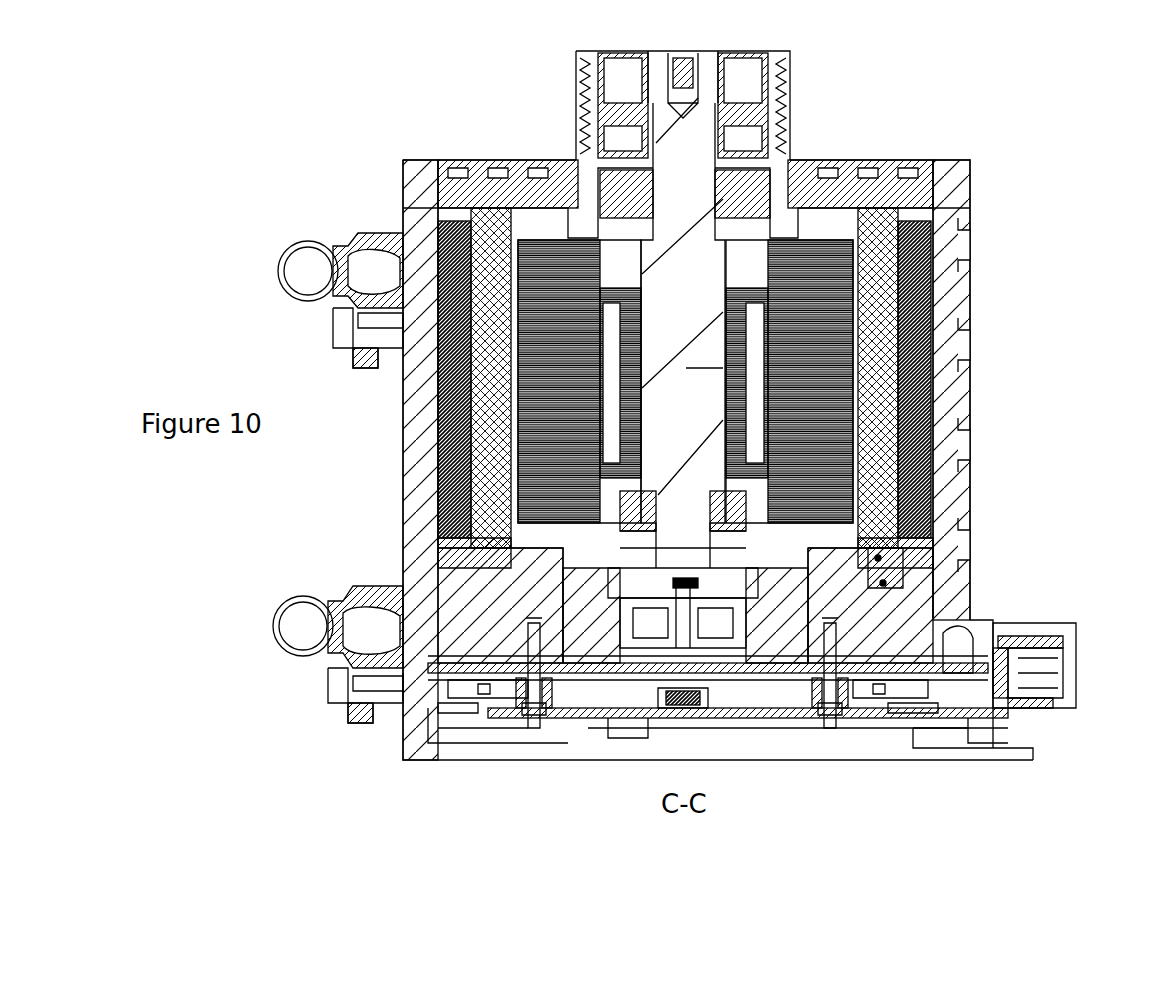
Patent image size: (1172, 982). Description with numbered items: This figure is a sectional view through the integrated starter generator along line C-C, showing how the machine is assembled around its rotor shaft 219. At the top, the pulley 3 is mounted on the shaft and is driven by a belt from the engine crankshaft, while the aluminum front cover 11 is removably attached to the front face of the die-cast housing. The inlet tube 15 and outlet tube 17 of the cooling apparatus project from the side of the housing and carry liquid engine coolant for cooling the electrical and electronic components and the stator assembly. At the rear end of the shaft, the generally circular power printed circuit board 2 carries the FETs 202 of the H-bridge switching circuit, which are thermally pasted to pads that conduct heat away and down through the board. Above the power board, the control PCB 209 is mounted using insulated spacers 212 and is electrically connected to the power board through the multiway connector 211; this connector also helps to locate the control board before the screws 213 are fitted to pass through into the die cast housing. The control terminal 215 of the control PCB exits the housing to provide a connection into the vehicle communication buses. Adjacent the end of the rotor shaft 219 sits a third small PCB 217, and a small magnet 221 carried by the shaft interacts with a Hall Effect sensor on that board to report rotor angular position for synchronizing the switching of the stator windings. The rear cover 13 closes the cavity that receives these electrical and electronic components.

The power printed circuit board 2 is at (887, 657).
The pulley 3 is at (578, 98).
The front cover 11 is at (430, 150).
The rear cover 13 is at (460, 748).
The inlet tube 15 is at (290, 608).
The outlet tube 17 is at (292, 256).
The FETs 202 is at (470, 685).
The control PCB 209 is at (905, 722).
The multiway connector 211 is at (680, 705).
The insulated spacers 212 is at (475, 690).
The screws 213 is at (528, 718).
The control terminal 215 is at (1055, 676).
The third small PCB 217 is at (430, 523).
The rotor shaft 219 is at (930, 340).
The magnet 221 is at (900, 575).